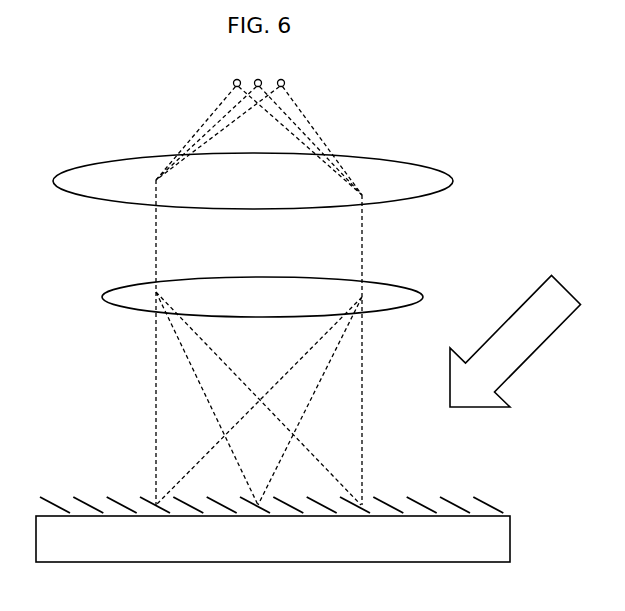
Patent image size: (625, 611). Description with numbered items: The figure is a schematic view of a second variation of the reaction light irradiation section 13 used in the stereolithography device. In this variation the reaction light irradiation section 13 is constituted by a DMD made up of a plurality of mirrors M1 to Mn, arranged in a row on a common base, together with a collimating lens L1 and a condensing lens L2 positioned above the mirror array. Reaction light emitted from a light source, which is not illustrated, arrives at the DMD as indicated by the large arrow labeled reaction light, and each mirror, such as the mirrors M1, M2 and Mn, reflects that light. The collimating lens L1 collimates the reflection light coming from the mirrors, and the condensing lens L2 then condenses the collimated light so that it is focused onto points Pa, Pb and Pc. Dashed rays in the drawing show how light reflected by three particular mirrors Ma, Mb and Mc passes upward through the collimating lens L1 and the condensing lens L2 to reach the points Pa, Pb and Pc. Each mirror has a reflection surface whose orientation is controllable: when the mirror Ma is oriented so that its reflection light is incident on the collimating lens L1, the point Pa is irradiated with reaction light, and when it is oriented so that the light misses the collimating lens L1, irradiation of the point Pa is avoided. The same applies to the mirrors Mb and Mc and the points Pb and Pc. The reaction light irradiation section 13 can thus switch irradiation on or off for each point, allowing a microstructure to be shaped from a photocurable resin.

The reaction light irradiation section 13 is at (563, 83).
The collimating lens L1 is at (423, 297).
The condensing lens L2 is at (453, 181).
The point Pa is at (259, 123).
The point Pb is at (259, 123).
The point Pc is at (259, 123).
The mirror M1 is at (50, 497).
The mirror M2 is at (87, 497).
The mirror Mn is at (491, 497).
The mirror Ma is at (155, 507).
The mirror Mb is at (257, 507).
The mirror Mc is at (357, 507).